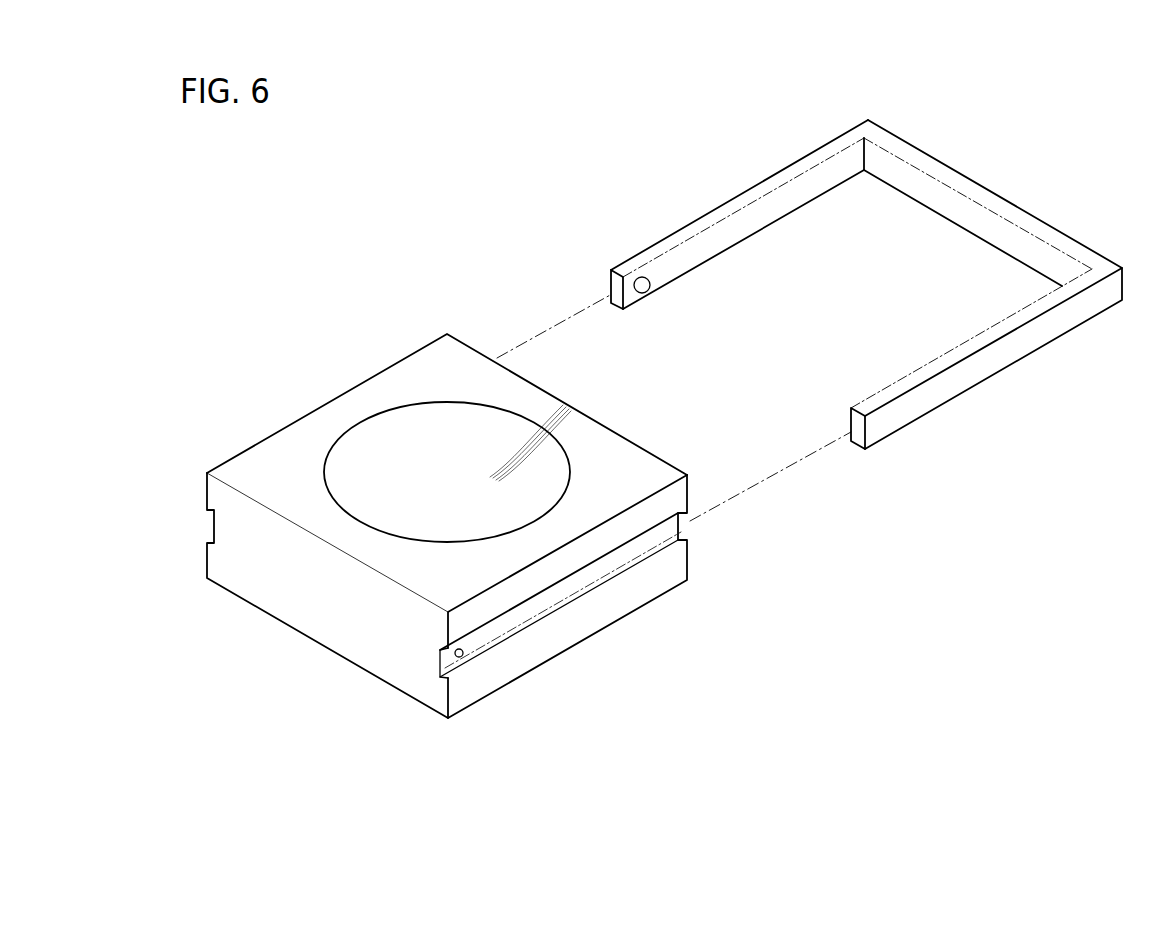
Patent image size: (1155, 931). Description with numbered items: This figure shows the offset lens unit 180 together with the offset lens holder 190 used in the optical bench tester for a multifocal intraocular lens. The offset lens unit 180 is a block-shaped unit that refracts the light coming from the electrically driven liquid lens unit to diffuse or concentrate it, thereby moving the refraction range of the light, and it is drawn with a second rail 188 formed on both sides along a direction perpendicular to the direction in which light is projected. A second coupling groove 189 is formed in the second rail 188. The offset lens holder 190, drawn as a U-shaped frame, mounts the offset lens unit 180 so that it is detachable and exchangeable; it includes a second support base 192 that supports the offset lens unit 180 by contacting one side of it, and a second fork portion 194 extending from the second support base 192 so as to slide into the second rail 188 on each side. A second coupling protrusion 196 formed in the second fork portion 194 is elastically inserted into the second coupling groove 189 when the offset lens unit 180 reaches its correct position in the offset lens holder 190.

The offset lens unit 180 is at (318, 354).
The second rail 188 is at (610, 567).
The second coupling groove 189 is at (462, 657).
The offset lens holder 190 is at (866, 242).
The second support base 192 is at (985, 200).
The second fork portion 194 is at (766, 183).
The second coupling protrusion 196 is at (649, 289).